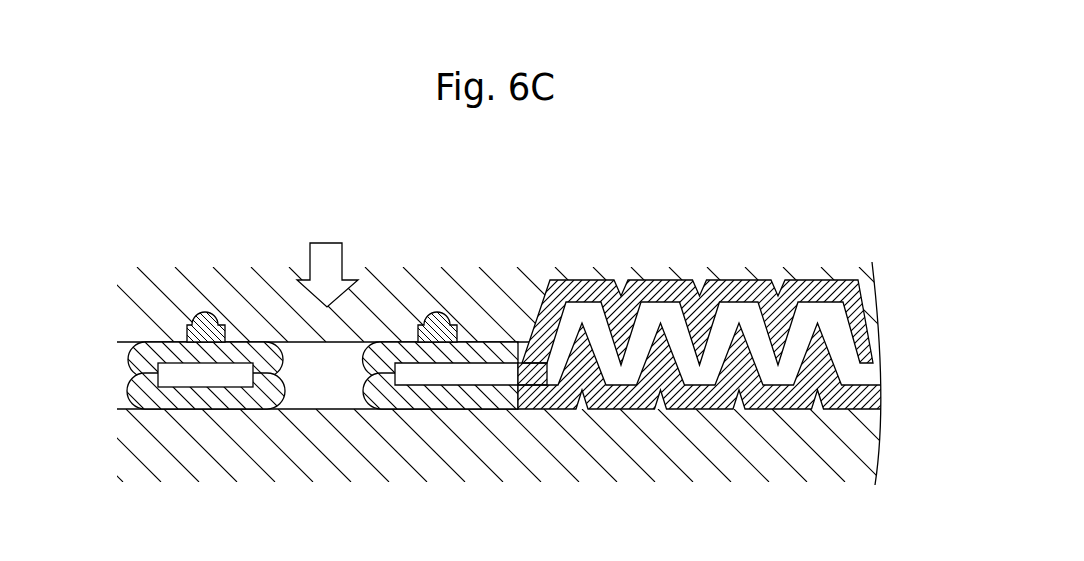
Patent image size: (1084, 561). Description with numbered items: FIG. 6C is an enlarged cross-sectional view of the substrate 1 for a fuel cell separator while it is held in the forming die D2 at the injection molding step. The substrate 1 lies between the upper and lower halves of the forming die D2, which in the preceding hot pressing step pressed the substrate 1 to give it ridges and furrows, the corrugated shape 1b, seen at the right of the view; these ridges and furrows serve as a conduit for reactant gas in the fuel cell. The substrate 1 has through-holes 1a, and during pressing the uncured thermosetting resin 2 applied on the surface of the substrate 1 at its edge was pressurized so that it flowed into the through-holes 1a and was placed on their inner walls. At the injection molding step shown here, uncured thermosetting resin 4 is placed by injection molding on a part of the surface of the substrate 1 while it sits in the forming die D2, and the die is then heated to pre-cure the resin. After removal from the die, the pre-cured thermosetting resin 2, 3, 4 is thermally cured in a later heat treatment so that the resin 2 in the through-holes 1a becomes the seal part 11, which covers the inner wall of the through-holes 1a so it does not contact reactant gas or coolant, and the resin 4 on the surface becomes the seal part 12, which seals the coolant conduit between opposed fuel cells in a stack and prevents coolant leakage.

The forming die D2 is at (168, 297).
The substrate 1 is at (447, 380).
The through-holes 1a is at (305, 358).
The corrugated shape 1b is at (742, 272).
The uncured thermosetting resin 2 is at (440, 310).
The seal part 11 is at (378, 368).
The uncured thermosetting resin 4 is at (447, 276).
The seal part 12 is at (440, 312).
The thermosetting resin 3 is at (701, 278).